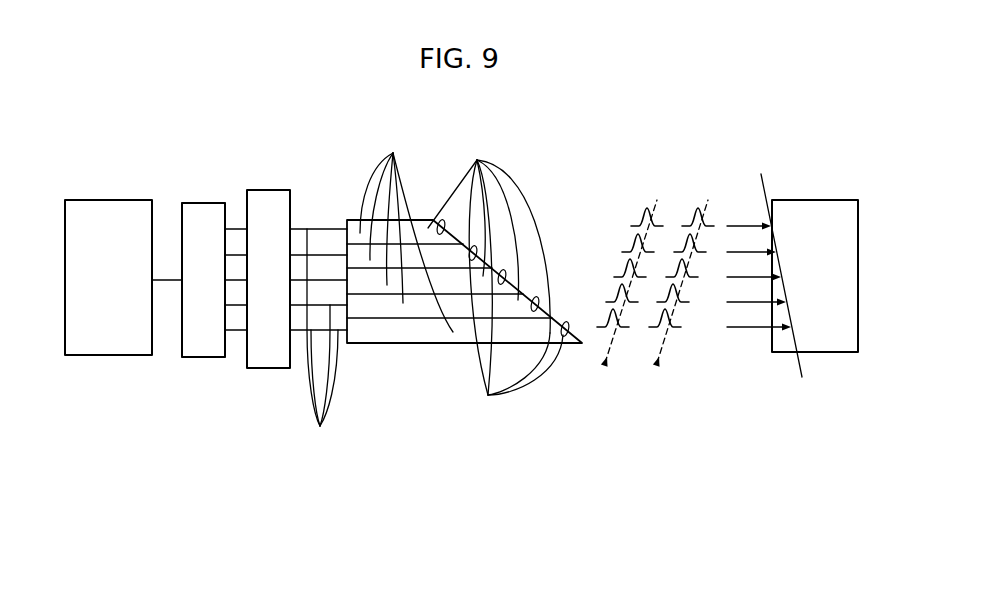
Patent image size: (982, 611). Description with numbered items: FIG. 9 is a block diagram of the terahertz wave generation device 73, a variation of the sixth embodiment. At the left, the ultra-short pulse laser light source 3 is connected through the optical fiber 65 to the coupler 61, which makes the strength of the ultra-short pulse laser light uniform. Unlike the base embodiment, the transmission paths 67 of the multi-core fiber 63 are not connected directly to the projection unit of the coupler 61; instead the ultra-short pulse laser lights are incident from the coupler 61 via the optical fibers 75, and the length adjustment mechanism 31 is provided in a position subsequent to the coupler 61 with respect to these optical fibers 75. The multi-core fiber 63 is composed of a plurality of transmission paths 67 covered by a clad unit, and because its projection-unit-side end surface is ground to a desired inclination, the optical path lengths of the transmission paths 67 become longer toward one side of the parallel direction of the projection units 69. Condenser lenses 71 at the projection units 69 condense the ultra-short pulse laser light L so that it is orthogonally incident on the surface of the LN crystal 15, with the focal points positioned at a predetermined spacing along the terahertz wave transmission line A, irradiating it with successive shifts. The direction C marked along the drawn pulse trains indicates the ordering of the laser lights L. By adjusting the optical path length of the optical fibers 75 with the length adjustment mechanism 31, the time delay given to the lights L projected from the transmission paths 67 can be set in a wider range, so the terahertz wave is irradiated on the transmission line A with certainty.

The terahertz wave generation device 73 is at (220, 152).
The ultra-short pulse laser light source 3 is at (87, 357).
The optical fiber 65 is at (170, 282).
The coupler 61 is at (203, 357).
The length adjustment mechanism 31 is at (268, 358).
The optical fibers 75 is at (322, 340).
The multi-core fiber 63 is at (430, 333).
The transmission paths 67 is at (406, 231).
The projection units 69 is at (489, 234).
The condenser lenses 71 is at (516, 290).
The LN crystal 15 is at (764, 320).
The ultra-short pulse laser light L is at (607, 317).
The pulse train propagation direction C is at (604, 359).
The terahertz wave transmission line A is at (789, 287).